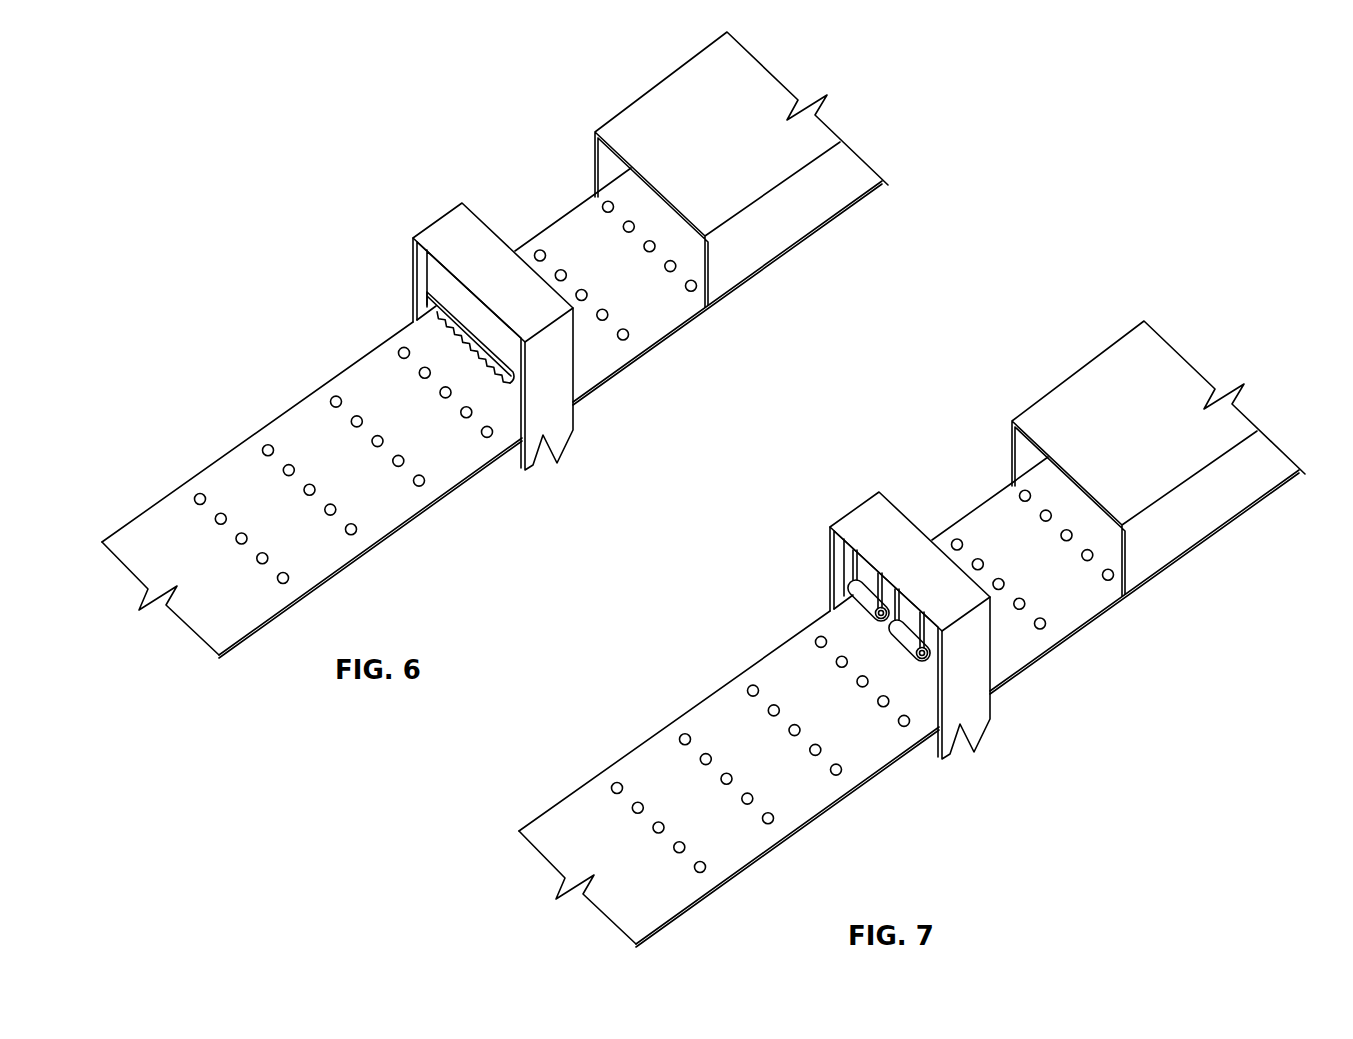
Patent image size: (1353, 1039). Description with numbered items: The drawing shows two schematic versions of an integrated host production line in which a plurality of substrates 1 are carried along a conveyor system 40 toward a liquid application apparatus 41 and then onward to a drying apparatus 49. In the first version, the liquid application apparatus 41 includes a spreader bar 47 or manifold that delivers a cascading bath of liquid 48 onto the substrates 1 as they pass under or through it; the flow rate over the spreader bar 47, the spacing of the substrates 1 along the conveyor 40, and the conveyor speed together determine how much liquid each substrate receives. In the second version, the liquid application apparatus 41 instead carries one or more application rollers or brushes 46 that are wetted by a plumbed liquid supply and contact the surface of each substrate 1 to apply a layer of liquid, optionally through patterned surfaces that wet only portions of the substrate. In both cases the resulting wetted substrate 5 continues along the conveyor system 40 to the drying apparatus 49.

In FIG. 6, the substrate 1 is at (198, 495).
In FIG. 7, the substrate 1 is at (761, 787).
In FIG. 6, the wetted substrate 5 is at (541, 252).
In FIG. 7, the wetted substrate 5 is at (1024, 587).
In FIG. 6, the conveyor system 40 is at (292, 410).
In FIG. 7, the conveyor system 40 is at (909, 702).
In FIG. 6, the liquid application apparatus 41 is at (573, 418).
In FIG. 7, the liquid application apparatus 41 is at (926, 633).
In FIG. 7, the application rollers or brushes 46 is at (859, 674).
In FIG. 6, the spreader bar 47 is at (427, 294).
In FIG. 6, the liquid cascade or bath 48 is at (507, 388).
In FIG. 6, the drying apparatus 49 is at (792, 230).
In FIG. 7, the drying apparatus 49 is at (1158, 458).